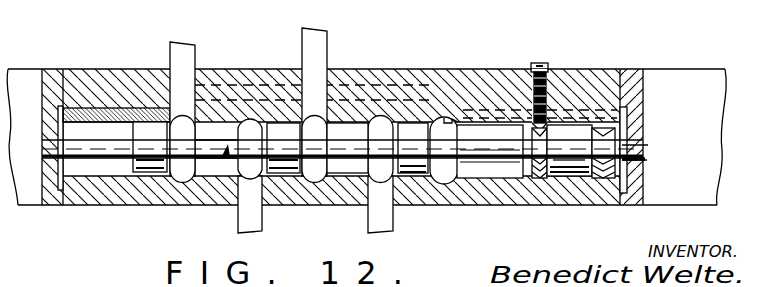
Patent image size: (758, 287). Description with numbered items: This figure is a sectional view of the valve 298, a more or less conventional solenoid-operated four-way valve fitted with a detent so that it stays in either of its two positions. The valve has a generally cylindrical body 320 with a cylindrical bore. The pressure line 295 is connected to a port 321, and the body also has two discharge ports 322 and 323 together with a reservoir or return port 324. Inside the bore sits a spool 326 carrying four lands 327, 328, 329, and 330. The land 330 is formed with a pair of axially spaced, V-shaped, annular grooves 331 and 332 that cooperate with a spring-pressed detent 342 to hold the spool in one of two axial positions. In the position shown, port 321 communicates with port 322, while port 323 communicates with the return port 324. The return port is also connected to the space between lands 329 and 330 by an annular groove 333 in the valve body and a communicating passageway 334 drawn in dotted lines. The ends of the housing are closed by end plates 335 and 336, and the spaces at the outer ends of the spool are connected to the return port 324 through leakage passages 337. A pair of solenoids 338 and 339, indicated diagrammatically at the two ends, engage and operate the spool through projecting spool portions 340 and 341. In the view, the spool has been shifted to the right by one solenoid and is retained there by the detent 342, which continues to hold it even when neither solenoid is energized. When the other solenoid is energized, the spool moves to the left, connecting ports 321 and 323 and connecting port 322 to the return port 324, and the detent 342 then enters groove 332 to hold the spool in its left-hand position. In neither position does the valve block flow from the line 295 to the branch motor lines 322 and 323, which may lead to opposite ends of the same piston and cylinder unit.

The pressure line 295 is at (323, 54).
The valve 298 is at (467, 66).
The cylindrical body 320 is at (528, 73).
The port 321 is at (301, 80).
The discharge port 322 is at (393, 200).
The discharge port 323 is at (263, 200).
The reservoir or return port 324 is at (196, 72).
The spool 326 is at (228, 158).
The land 327 is at (153, 174).
The land 328 is at (283, 176).
The land 329 is at (424, 176).
The land 330 is at (567, 186).
The V-shaped annular groove 331 is at (538, 178).
The V-shaped annular groove 332 is at (602, 180).
The annular groove 333 is at (458, 122).
The passageway 334 is at (432, 122).
The end plate 335 is at (57, 73).
The end plate 336 is at (633, 72).
The leakage passage 337 is at (96, 108).
The solenoid 338 is at (24, 80).
The solenoid 339 is at (680, 77).
The projecting spool portion 340 is at (106, 158).
The projecting spool portion 341 is at (628, 165).
The detent 342 is at (569, 152).